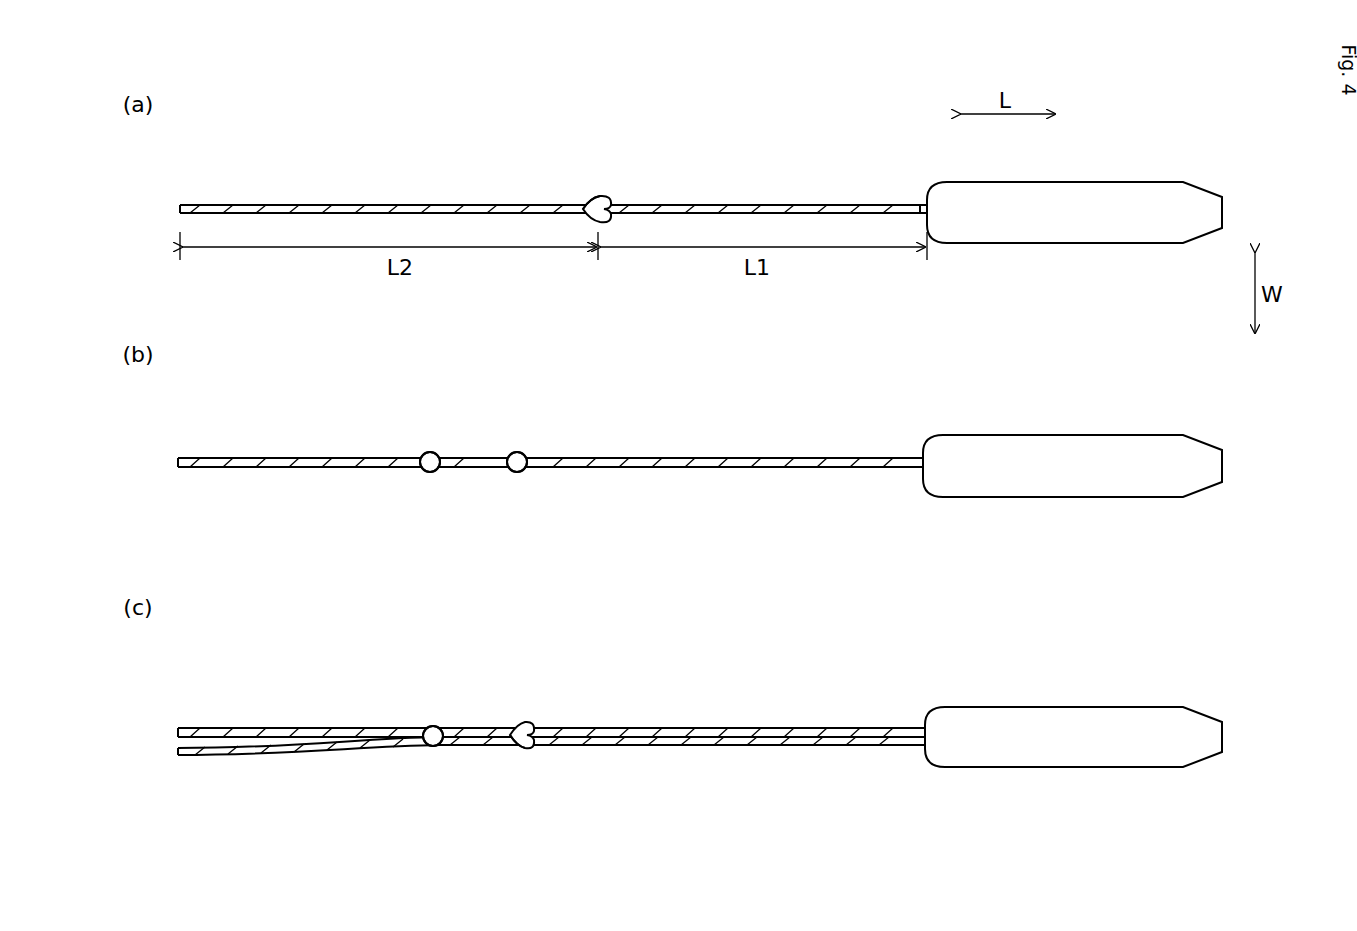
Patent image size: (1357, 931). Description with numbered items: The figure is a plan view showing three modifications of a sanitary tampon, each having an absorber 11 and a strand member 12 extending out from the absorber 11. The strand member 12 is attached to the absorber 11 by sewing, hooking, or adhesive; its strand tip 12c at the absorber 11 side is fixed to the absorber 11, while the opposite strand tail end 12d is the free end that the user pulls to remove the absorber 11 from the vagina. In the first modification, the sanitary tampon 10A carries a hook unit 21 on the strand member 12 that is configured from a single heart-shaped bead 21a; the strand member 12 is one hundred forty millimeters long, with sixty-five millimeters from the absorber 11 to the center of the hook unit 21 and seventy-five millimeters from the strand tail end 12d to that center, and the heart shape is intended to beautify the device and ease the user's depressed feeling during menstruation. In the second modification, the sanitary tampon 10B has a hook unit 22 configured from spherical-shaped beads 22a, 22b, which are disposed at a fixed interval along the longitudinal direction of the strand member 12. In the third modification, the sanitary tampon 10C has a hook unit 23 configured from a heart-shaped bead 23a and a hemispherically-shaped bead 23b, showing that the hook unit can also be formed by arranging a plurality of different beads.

The sanitary tampon 10A is at (430, 188).
The sanitary tampon 10B is at (370, 443).
The sanitary tampon 10C is at (370, 710).
The absorber 11 is at (1146, 234).
The strand member 12 is at (775, 203).
The strand tip 12c is at (924, 206).
The strand tail end 12d is at (180, 205).
The hook unit 21 is at (610, 200).
The heart-shaped bead 21a is at (596, 197).
The hook unit 22 is at (524, 442).
The spherical-shaped bead 22a is at (517, 473).
The spherical-shaped bead 22b is at (430, 473).
The hook unit 23 is at (524, 714).
The heart-shaped bead 23a is at (520, 749).
The hemispherically-shaped bead 23b is at (433, 747).